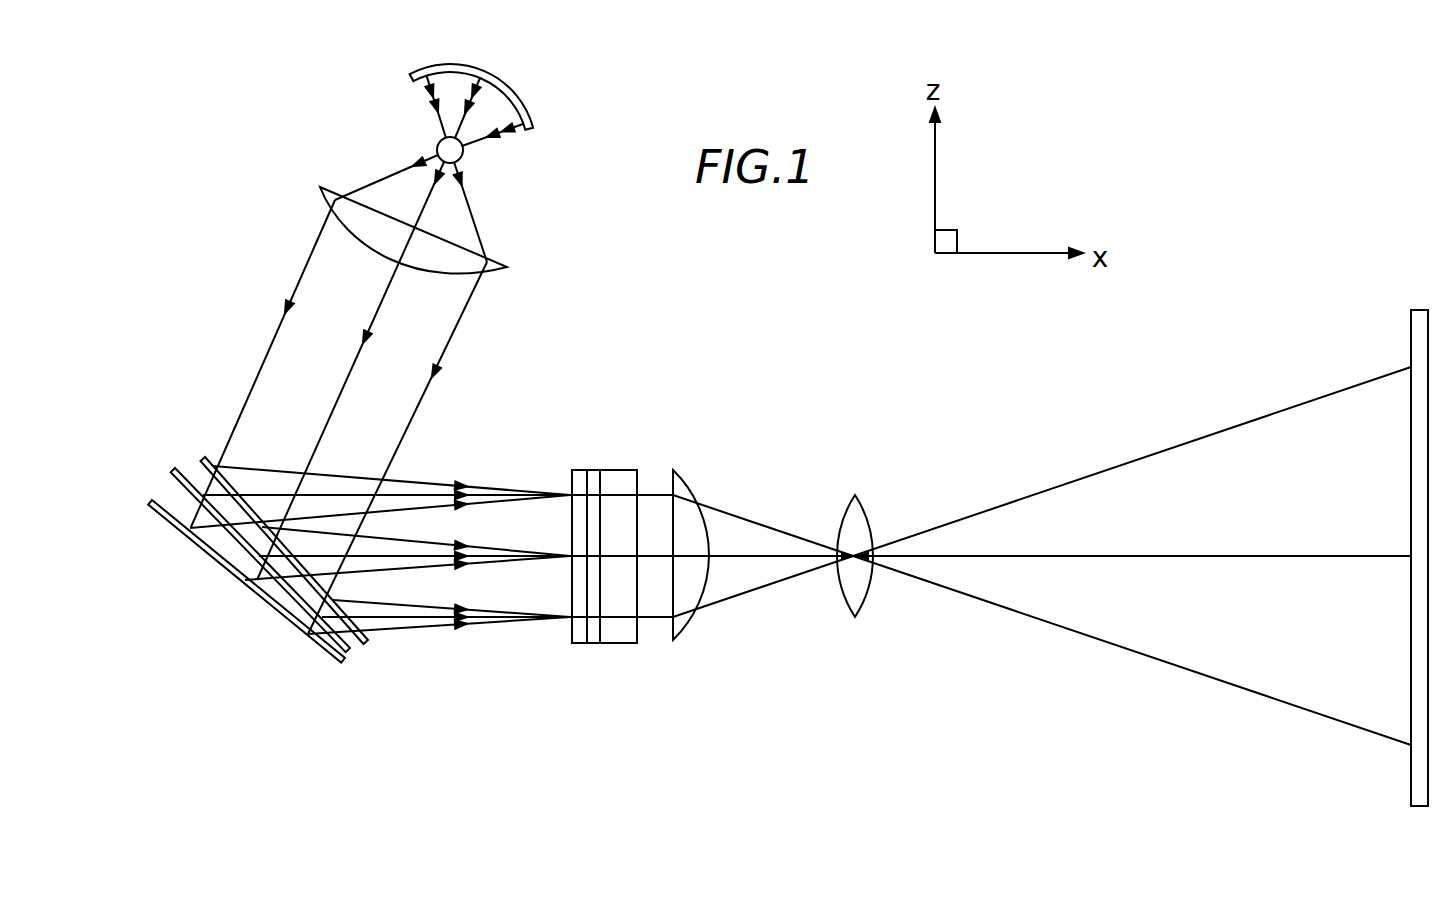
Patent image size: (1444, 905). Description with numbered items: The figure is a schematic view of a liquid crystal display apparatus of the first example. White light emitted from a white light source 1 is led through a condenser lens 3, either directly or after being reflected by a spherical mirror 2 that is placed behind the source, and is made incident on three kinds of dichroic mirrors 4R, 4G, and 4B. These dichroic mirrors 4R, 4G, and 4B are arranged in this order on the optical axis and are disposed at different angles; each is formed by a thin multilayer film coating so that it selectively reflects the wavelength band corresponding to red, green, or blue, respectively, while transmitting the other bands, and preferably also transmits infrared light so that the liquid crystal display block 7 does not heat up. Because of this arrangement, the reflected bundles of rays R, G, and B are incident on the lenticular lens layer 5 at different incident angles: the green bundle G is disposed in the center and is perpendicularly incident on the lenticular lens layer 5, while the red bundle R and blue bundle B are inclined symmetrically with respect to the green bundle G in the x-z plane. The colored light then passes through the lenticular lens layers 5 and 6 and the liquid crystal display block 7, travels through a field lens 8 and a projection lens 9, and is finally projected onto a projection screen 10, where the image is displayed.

The white light source 1 is at (463, 155).
The spherical mirror 2 is at (535, 125).
The condenser lens 3 is at (322, 190).
The dichroic mirror 4R is at (205, 455).
The dichroic mirror 4G is at (177, 468).
The dichroic mirror 4B is at (152, 503).
The red light R is at (240, 463).
The green light G is at (265, 493).
The blue light B is at (313, 518).
The lenticular lens layer 5 is at (578, 468).
The lenticular lens layer 6 is at (592, 468).
The liquid crystal display block 7 is at (618, 468).
The field lens 8 is at (687, 487).
The projection lens 9 is at (858, 500).
The projection screen 10 is at (1406, 327).